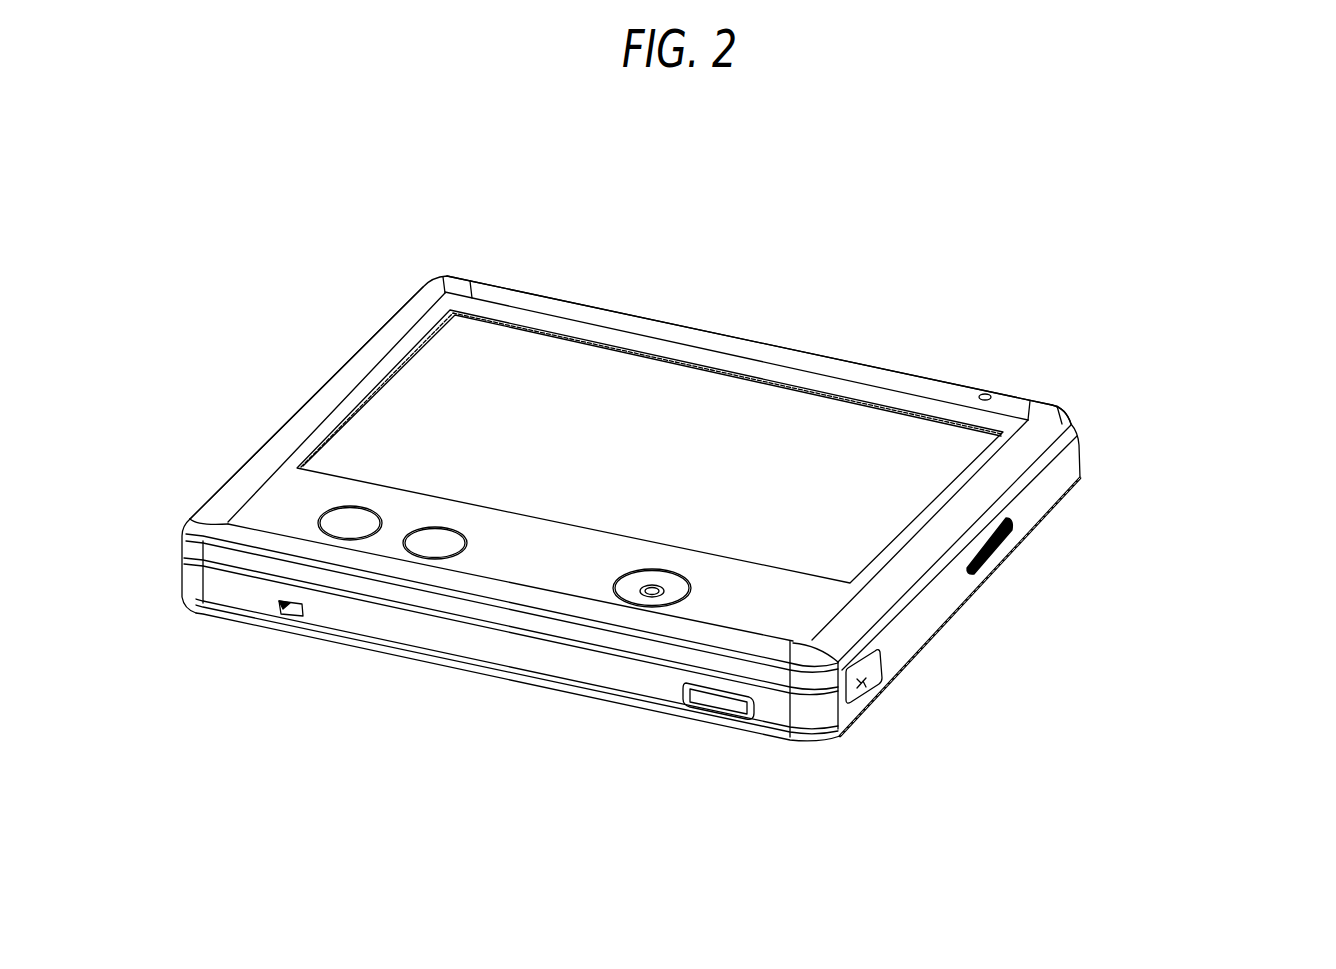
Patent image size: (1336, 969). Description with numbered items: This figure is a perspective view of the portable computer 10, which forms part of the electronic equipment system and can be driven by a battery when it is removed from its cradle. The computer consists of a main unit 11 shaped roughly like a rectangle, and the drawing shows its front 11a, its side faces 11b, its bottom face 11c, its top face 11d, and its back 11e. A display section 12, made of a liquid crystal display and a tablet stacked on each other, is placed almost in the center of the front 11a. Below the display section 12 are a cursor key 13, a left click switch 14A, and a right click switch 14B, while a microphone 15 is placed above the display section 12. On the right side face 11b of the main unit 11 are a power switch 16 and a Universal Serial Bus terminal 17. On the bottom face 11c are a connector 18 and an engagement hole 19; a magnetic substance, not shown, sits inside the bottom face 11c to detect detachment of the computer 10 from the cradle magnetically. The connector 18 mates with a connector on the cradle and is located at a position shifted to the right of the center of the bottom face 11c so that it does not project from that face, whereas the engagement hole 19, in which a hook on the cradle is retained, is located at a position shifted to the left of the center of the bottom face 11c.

The portable computer 10 is at (975, 272).
The main unit 11 is at (1080, 410).
The front 11a is at (476, 300).
The side faces 11b is at (266, 452).
The bottom face 11c is at (480, 655).
The top face 11d is at (1085, 456).
The back 11e is at (1060, 508).
The display section 12 is at (611, 371).
The cursor key 13 is at (655, 598).
The left click switch 14A is at (330, 524).
The right click switch 14B is at (432, 547).
The microphone 15 is at (988, 394).
The power switch 16 is at (1010, 552).
The Universal Serial Bus (USB) terminal 17 is at (878, 691).
The connector 18 is at (720, 728).
The engagement hole 19 is at (280, 613).